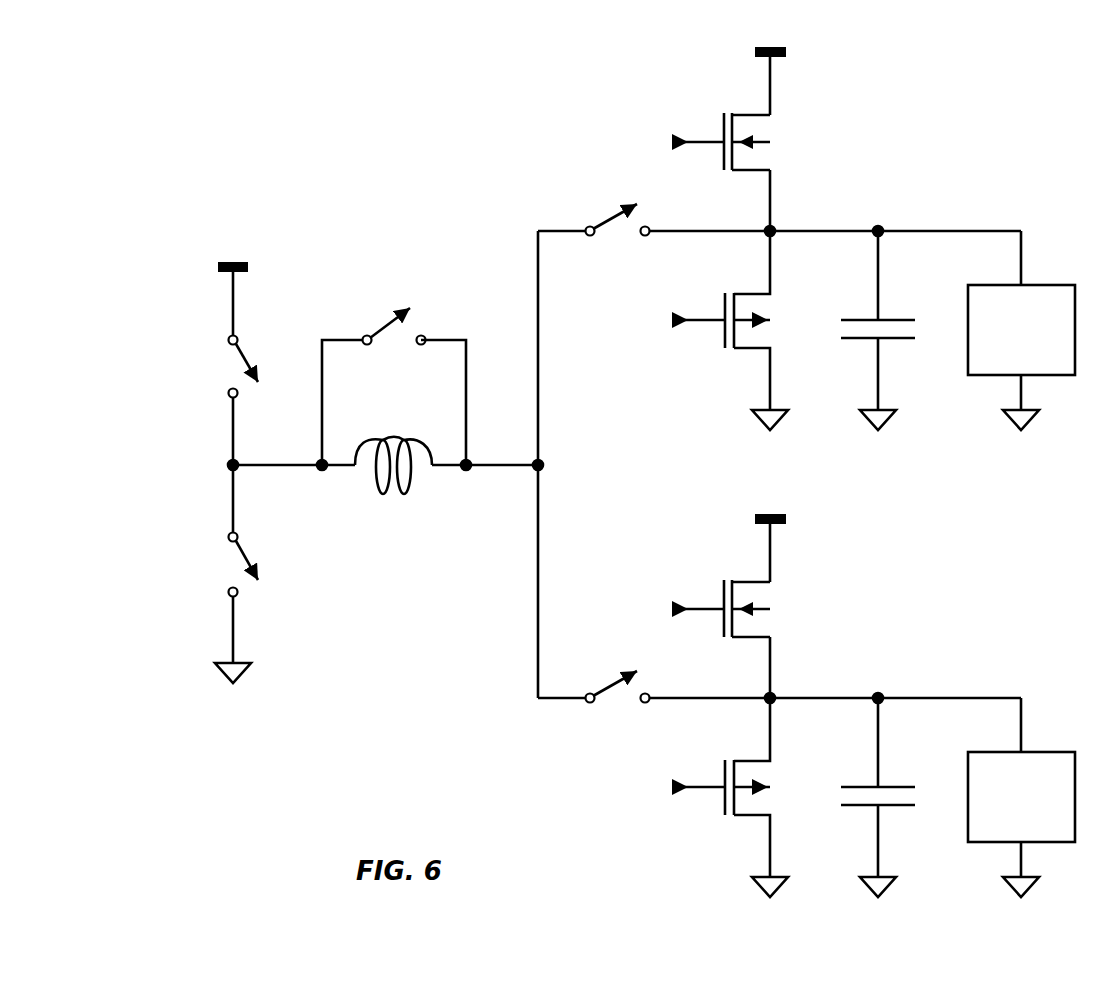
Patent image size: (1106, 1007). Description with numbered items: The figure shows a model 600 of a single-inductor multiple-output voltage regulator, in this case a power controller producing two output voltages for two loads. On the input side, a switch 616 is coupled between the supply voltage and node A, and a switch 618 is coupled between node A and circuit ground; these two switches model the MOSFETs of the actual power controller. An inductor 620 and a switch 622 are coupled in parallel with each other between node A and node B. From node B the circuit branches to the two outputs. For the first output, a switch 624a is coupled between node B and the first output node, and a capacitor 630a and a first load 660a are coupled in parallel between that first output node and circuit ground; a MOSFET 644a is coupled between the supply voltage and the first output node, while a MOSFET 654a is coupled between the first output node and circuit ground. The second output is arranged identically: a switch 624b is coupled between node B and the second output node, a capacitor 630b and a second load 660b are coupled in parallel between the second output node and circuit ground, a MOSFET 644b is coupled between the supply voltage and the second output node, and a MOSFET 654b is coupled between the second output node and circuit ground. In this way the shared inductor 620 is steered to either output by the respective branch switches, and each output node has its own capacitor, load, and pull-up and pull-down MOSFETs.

The model 600 is at (231, 158).
The switch 616 is at (249, 358).
The switch 618 is at (249, 556).
The inductor 620 is at (398, 434).
The switch 622 is at (366, 328).
The switch 624a is at (607, 219).
The switch 624b is at (607, 686).
The MOSFET 644a is at (747, 112).
The MOSFET 644b is at (747, 579).
The MOSFET 654a is at (750, 292).
The MOSFET 654b is at (750, 759).
The capacitor 630a is at (897, 318).
The capacitor 630b is at (897, 785).
The load 660a is at (1044, 284).
The load 660b is at (1044, 751).